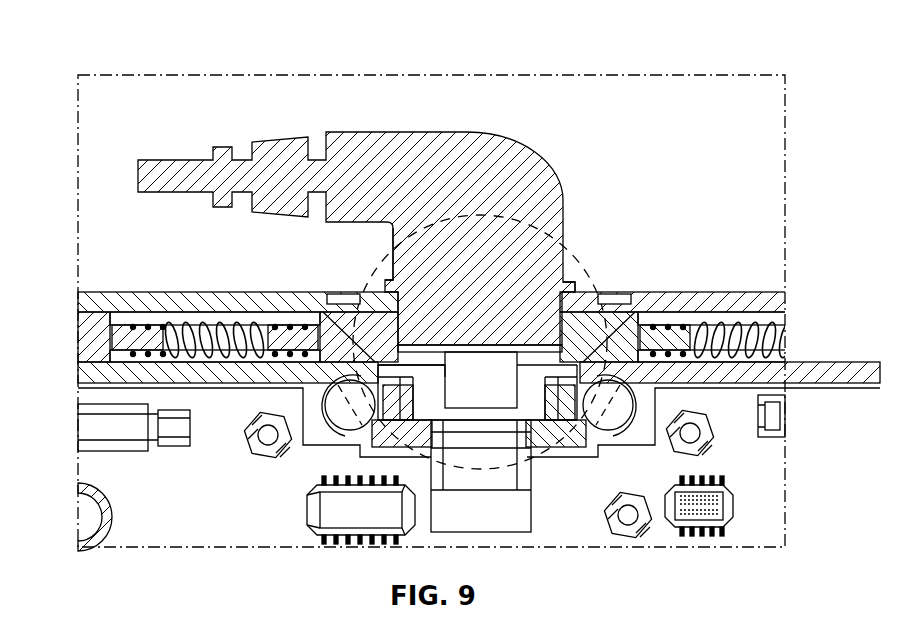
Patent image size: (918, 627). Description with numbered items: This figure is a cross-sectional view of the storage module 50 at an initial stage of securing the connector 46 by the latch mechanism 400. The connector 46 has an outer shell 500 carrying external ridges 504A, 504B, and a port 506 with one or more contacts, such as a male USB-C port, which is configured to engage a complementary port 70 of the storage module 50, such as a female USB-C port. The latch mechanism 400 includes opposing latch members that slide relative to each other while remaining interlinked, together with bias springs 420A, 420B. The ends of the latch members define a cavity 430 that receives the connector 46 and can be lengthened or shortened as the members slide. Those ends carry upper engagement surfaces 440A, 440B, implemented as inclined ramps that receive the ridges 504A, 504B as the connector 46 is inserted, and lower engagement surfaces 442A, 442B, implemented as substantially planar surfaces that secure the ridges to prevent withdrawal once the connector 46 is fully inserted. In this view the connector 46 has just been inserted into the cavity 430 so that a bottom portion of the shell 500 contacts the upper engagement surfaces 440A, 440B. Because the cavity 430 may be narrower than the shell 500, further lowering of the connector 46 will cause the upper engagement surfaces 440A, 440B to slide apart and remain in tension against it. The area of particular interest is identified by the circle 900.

The storage module 50 is at (88, 46).
The connector 46 is at (556, 133).
The outer shell 500 is at (563, 165).
The external ridge 504A is at (395, 273).
The external ridge 504B is at (575, 278).
The circle 900 is at (596, 239).
The latch mechanism 400 is at (479, 353).
The bias spring 420A is at (190, 292).
The bias spring 420B is at (720, 318).
The upper engagement surface 440A is at (563, 345).
The upper engagement surface 440B is at (395, 345).
The lower engagement surface 442A is at (590, 365).
The lower engagement surface 442B is at (395, 345).
The cavity 430 is at (496, 350).
The port 506 is at (457, 367).
The complementary port 70 is at (502, 458).